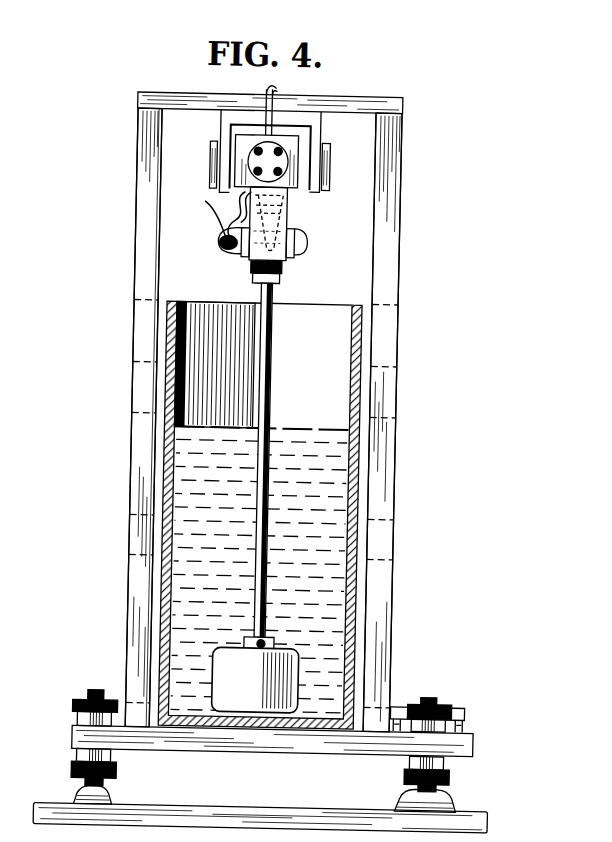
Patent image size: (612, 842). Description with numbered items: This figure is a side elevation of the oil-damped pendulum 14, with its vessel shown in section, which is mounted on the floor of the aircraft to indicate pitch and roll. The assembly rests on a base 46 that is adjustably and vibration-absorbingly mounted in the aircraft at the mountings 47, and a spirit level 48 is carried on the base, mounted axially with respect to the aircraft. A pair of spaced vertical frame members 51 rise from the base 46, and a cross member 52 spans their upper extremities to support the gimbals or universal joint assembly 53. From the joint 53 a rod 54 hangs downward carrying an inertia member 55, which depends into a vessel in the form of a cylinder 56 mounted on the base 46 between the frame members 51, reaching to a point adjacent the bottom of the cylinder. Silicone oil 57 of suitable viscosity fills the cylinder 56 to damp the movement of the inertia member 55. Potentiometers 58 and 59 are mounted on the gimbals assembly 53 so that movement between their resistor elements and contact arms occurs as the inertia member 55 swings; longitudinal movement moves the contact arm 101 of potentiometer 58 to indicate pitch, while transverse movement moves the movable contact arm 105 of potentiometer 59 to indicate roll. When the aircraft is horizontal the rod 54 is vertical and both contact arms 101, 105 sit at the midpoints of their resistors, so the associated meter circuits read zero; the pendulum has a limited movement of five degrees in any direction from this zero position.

The oil-damped pendulum 14 is at (144, 92).
The cross member 52 is at (336, 99).
The gimbals or universal joint assembly 53 is at (322, 190).
The contact arm 101 is at (289, 231).
The movable contact arm 105 is at (231, 229).
The potentiometer 59 is at (214, 252).
The potentiometer 58 is at (286, 257).
The cylinder 56 is at (165, 490).
The silicone oil 57 is at (302, 430).
The rod 54 is at (271, 378).
The inertia member 55 is at (233, 693).
The base 46 is at (252, 754).
The adjustable vibration-absorbing mounting 47 is at (78, 771).
The spirit level 48 is at (461, 705).
The vertical frame members 51 is at (133, 446).